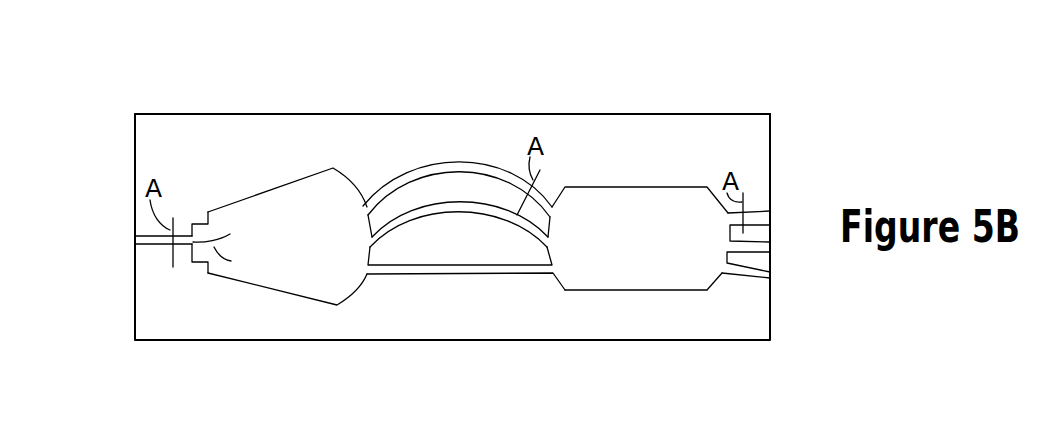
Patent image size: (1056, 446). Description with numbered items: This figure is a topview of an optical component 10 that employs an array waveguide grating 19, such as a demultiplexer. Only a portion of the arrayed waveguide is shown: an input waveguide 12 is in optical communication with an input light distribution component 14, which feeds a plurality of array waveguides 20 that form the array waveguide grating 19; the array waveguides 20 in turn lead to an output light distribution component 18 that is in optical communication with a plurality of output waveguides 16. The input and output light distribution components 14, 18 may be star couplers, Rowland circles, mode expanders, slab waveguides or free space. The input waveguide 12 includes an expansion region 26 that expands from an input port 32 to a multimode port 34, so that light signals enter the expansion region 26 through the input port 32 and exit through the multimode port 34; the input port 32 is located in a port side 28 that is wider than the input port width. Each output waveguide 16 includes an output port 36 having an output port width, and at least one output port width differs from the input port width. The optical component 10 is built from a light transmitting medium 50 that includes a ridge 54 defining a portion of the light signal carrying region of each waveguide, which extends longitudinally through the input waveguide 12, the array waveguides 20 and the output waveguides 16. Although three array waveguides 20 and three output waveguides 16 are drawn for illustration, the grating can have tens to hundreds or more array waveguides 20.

The optical component 10 is at (529, 97).
The input waveguide 12 is at (151, 253).
The input light distribution component 14 is at (283, 185).
The output waveguides 16 is at (752, 213).
The output light distribution component 18 is at (628, 291).
The array waveguide grating 19 is at (392, 138).
The array waveguides 20 is at (433, 275).
The expansion region 26 is at (206, 222).
The port side 28 is at (192, 260).
The input port 32 is at (225, 233).
The multimode port 34 is at (236, 263).
The output port 36 is at (726, 218).
The light transmitting medium 50 is at (468, 295).
The ridge 54 is at (485, 163).